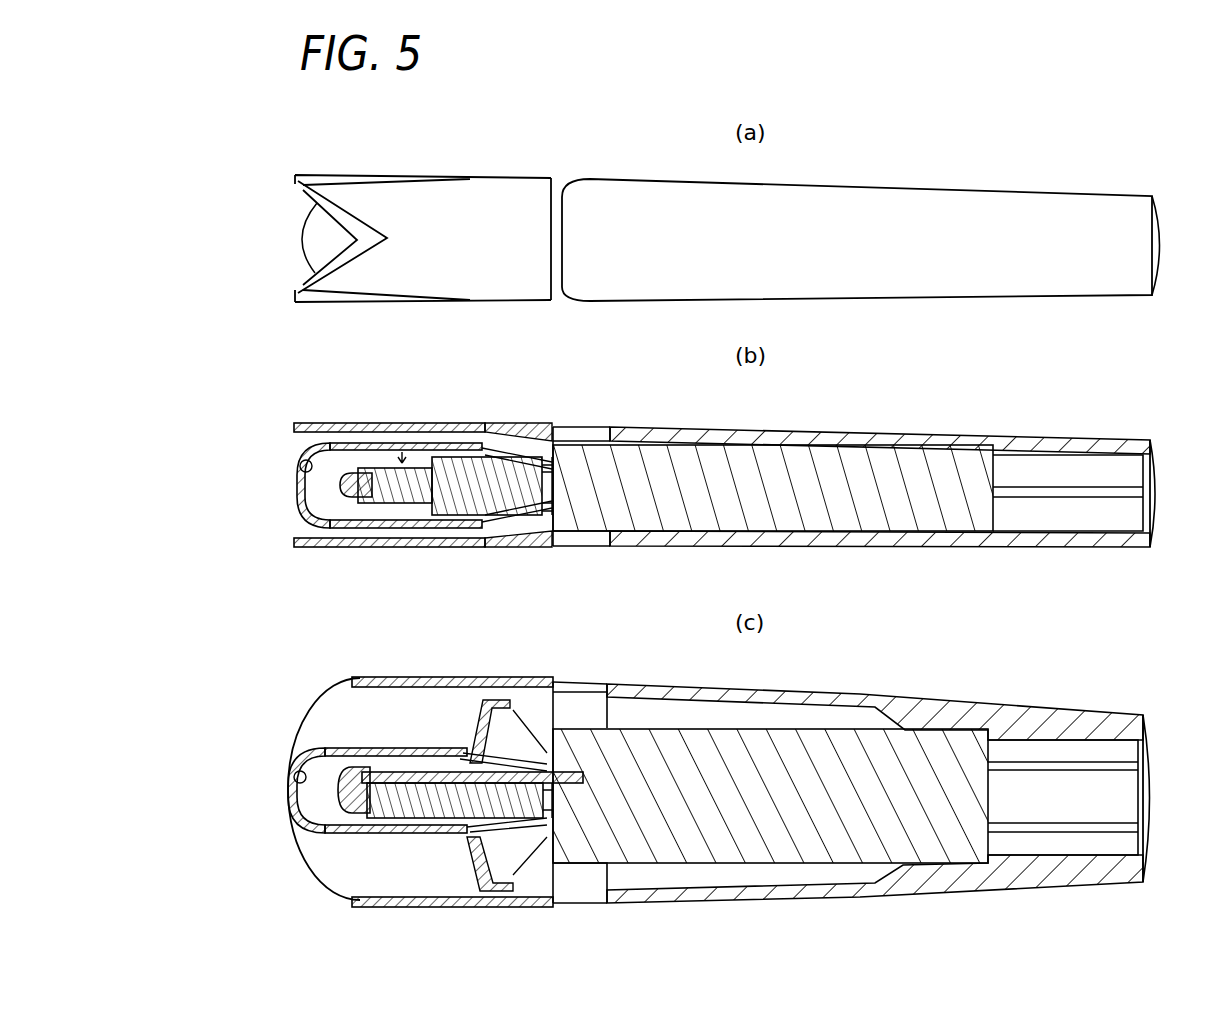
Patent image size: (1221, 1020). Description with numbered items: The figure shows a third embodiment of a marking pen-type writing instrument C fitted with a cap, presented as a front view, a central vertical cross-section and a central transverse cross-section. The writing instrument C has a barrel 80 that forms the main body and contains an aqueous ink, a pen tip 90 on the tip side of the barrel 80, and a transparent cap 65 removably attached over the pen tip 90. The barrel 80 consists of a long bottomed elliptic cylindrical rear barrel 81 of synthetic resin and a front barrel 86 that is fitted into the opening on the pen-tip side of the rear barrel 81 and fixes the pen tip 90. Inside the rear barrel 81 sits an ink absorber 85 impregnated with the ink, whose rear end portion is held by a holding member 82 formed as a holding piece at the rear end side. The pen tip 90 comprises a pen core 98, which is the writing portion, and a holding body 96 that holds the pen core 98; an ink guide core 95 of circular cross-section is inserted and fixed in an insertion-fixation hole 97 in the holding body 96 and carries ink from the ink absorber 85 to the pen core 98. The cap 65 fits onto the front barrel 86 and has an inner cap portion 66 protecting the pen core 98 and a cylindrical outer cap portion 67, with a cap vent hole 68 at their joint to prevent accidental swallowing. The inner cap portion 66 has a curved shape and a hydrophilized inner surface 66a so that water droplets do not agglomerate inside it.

The cap 65 is at (465, 195).
The front barrel 86 is at (577, 181).
The barrel 80 is at (816, 172).
The writing instrument C is at (903, 168).
The rear barrel 81 is at (1027, 285).
The ink absorber 85 is at (793, 462).
The holding member 82 is at (1081, 488).
The outer cap portion 67 is at (311, 423).
The inner cap portion 66 is at (358, 443).
The inner surface 66a is at (302, 462).
The pen core 98 is at (340, 486).
The holding body 96 is at (392, 503).
The insertion-fixation hole 97 is at (375, 772).
The ink guide core 95 is at (447, 748).
The cap vent hole 68 is at (512, 697).
The pen tip 90 is at (413, 428).